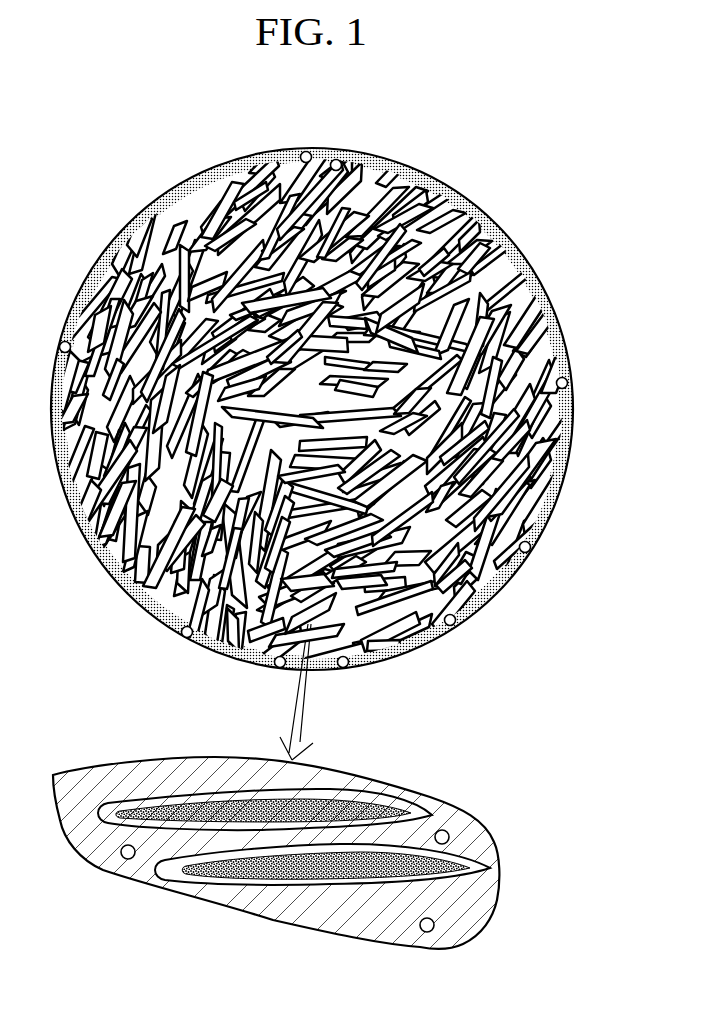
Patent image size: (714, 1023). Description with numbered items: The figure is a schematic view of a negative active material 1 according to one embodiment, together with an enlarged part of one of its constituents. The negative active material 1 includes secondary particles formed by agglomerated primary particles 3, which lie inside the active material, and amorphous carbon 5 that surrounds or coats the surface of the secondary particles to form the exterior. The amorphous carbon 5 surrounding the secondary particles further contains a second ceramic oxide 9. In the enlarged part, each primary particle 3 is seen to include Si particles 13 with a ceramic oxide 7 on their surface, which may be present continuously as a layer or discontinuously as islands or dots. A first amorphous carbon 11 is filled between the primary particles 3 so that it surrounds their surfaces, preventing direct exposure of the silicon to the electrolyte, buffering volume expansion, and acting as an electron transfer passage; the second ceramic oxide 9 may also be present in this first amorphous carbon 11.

The negative active material 1 is at (300, 113).
The primary particles 3 is at (114, 251).
The amorphous carbon 5 is at (567, 398).
The ceramic oxide 7 is at (479, 855).
The second ceramic oxide 9 is at (452, 626).
The first amorphous carbon 11 is at (270, 905).
The Si particles 13 is at (325, 880).